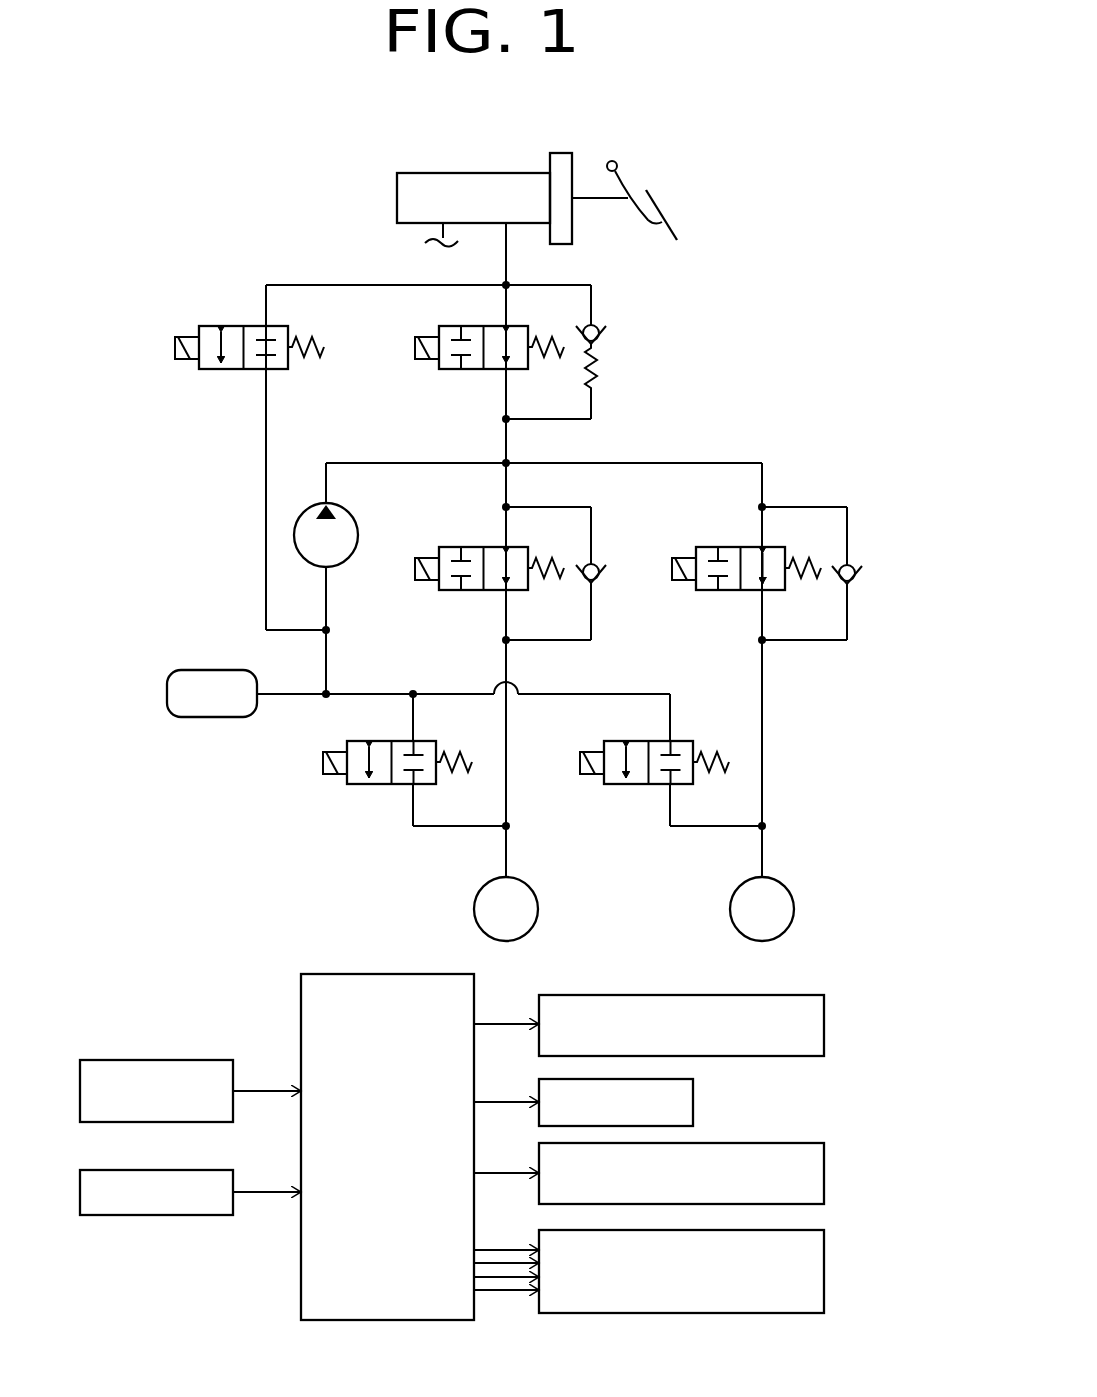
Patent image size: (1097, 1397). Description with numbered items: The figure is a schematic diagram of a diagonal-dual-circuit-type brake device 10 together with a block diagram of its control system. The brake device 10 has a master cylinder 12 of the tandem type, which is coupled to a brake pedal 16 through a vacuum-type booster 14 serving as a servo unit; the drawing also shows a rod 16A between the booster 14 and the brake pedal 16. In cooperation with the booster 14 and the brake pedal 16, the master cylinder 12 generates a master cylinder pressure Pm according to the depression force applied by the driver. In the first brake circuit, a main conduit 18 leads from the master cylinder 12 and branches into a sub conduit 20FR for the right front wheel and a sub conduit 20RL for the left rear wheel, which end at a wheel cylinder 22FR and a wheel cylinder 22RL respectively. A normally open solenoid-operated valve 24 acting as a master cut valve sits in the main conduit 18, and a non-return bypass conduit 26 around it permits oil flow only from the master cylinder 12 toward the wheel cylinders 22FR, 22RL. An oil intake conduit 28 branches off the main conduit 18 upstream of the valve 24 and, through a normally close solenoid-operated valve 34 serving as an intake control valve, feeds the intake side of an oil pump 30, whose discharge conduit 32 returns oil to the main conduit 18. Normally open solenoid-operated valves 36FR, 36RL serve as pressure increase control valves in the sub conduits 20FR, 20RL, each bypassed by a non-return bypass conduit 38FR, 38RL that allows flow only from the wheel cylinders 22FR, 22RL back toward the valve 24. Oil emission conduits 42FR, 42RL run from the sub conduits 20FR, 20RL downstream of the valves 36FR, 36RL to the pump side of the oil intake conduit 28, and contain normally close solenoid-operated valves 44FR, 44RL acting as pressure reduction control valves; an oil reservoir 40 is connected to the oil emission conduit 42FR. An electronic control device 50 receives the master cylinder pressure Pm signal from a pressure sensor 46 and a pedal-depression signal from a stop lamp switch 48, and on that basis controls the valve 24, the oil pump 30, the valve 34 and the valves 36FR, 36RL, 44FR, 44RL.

The brake device 10 is at (268, 200).
The master cylinder 12 is at (452, 170).
The vacuum-type booster 14 is at (563, 153).
The brake pedal 16 is at (677, 222).
The push rod 16A is at (590, 198).
The main conduit 18 is at (506, 437).
The sub conduit 20FR is at (506, 660).
The sub conduit 20RL is at (762, 677).
The wheel cylinder 22FR is at (474, 905).
The wheel cylinder 22RL is at (731, 905).
The solenoid-operated valve 24 is at (453, 325).
The non-return bypass conduit 26 is at (591, 402).
The oil intake conduit 28 is at (266, 437).
The oil pump 30 is at (358, 530).
The discharge conduit 32 is at (363, 463).
The solenoid-operated valve 34 is at (212, 325).
The solenoid-operated valve 36FR is at (447, 547).
The solenoid-operated valve 36RL is at (706, 547).
The non-return bypass conduit 38FR is at (630, 510).
The non-return bypass conduit 38RL is at (803, 507).
The oil reservoir 40 is at (210, 717).
The oil emission conduit 42FR is at (367, 694).
The oil emission conduit 42RL is at (623, 694).
The solenoid-operated valve 44FR is at (355, 785).
The solenoid-operated valve 44RL is at (620, 785).
The pressure sensor 46 is at (147, 1060).
The stop lamp switch 48 is at (150, 1215).
The electronic control device 50 is at (411, 1205).